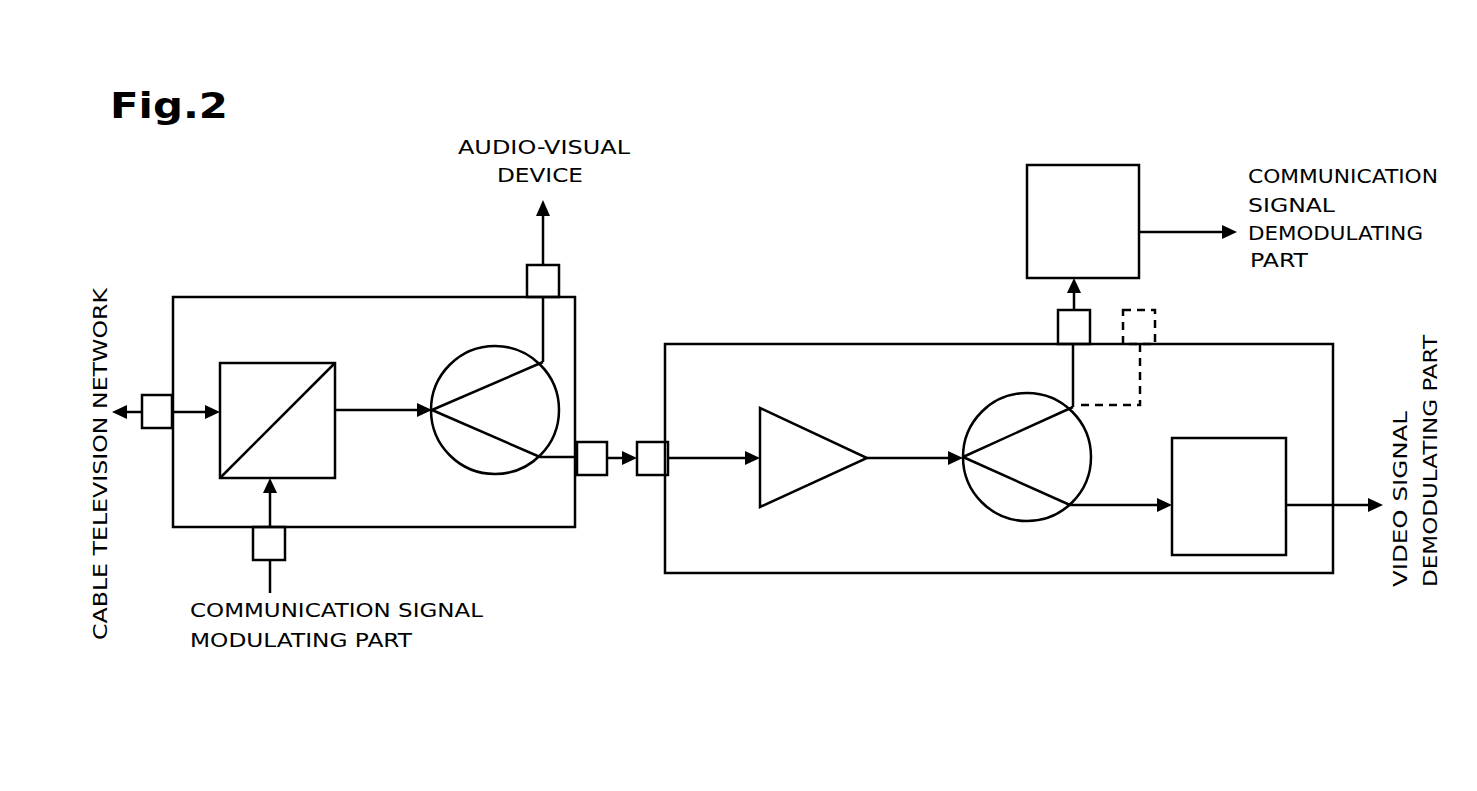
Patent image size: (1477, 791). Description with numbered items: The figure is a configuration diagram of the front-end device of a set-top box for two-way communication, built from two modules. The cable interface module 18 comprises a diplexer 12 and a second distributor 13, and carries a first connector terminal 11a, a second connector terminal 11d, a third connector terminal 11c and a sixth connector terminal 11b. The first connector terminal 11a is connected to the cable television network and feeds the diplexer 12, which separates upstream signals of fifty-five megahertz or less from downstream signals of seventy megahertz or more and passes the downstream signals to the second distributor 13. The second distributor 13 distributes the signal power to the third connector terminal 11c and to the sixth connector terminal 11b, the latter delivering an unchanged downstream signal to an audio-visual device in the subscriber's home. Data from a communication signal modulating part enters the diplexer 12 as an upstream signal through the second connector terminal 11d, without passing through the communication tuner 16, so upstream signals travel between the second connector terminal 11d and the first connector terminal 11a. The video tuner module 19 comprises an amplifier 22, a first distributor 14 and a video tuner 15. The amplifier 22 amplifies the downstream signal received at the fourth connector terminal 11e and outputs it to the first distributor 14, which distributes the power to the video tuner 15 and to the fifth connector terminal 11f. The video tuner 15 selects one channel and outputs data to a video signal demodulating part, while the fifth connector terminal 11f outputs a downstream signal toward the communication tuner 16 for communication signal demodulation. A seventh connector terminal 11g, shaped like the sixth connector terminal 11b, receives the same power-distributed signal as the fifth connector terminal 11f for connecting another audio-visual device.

The first connector terminal 11a is at (150, 395).
The sixth connector terminal 11b is at (558, 265).
The third connector terminal 11c is at (592, 442).
The second connector terminal 11d is at (285, 545).
The fourth connector terminal 11e is at (649, 442).
The fifth connector terminal 11f is at (1058, 325).
The seventh connector terminal 11g is at (1155, 323).
The diplexer 12 is at (253, 380).
The second distributor 13 is at (478, 362).
The first distributor 14 is at (980, 407).
The video tuner 15 is at (1218, 535).
The communication tuner 16 is at (1075, 180).
The cable interface module 18 is at (335, 312).
The video tuner module 19 is at (1288, 343).
The amplifier 22 is at (822, 425).